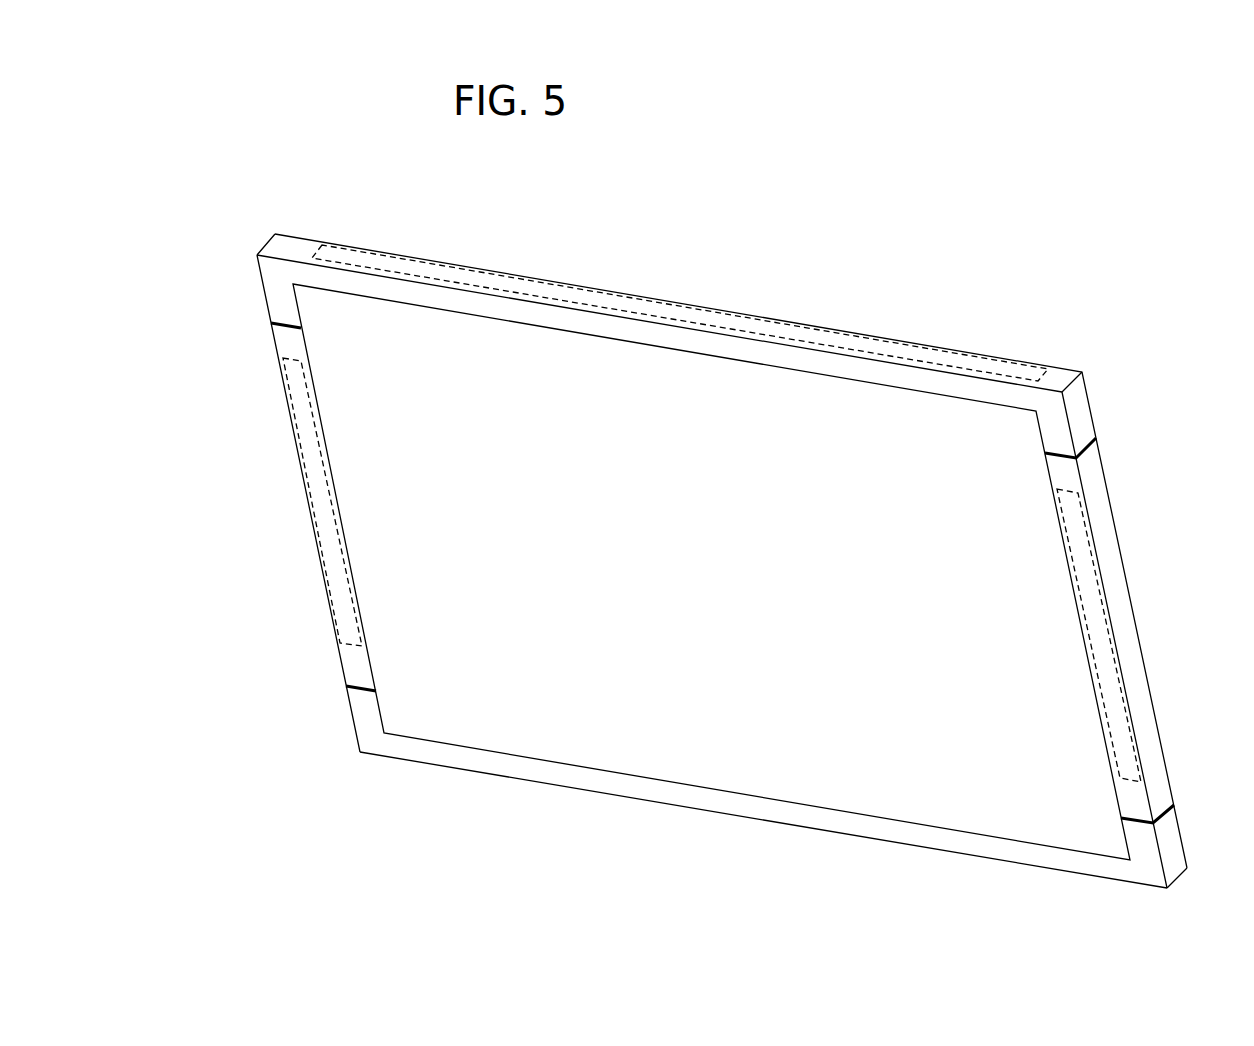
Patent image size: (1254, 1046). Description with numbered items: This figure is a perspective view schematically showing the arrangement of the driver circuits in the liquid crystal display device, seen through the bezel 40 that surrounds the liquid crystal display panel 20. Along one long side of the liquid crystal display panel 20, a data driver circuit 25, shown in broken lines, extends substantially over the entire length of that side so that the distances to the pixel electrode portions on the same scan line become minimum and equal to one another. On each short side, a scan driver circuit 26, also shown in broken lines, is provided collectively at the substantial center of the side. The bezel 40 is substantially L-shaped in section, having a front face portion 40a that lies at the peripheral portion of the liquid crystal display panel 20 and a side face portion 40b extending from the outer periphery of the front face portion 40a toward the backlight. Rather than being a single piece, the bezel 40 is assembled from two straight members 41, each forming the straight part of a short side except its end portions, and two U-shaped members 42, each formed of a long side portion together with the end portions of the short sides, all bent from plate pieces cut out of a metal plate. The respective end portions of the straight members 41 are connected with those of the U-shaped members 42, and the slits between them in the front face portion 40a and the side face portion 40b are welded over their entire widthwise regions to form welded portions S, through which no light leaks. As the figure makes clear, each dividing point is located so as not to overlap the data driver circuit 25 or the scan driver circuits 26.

The liquid crystal display panel 20 is at (713, 573).
The data driver circuit 25 is at (758, 318).
The scan driver circuit 26 is at (300, 458).
The bezel 40 is at (719, 500).
The front face portion 40a is at (268, 283).
The side face portion 40b is at (312, 246).
The straight member 41 is at (318, 538).
The U-shaped member 42 is at (668, 303).
The welded portion S is at (284, 328).